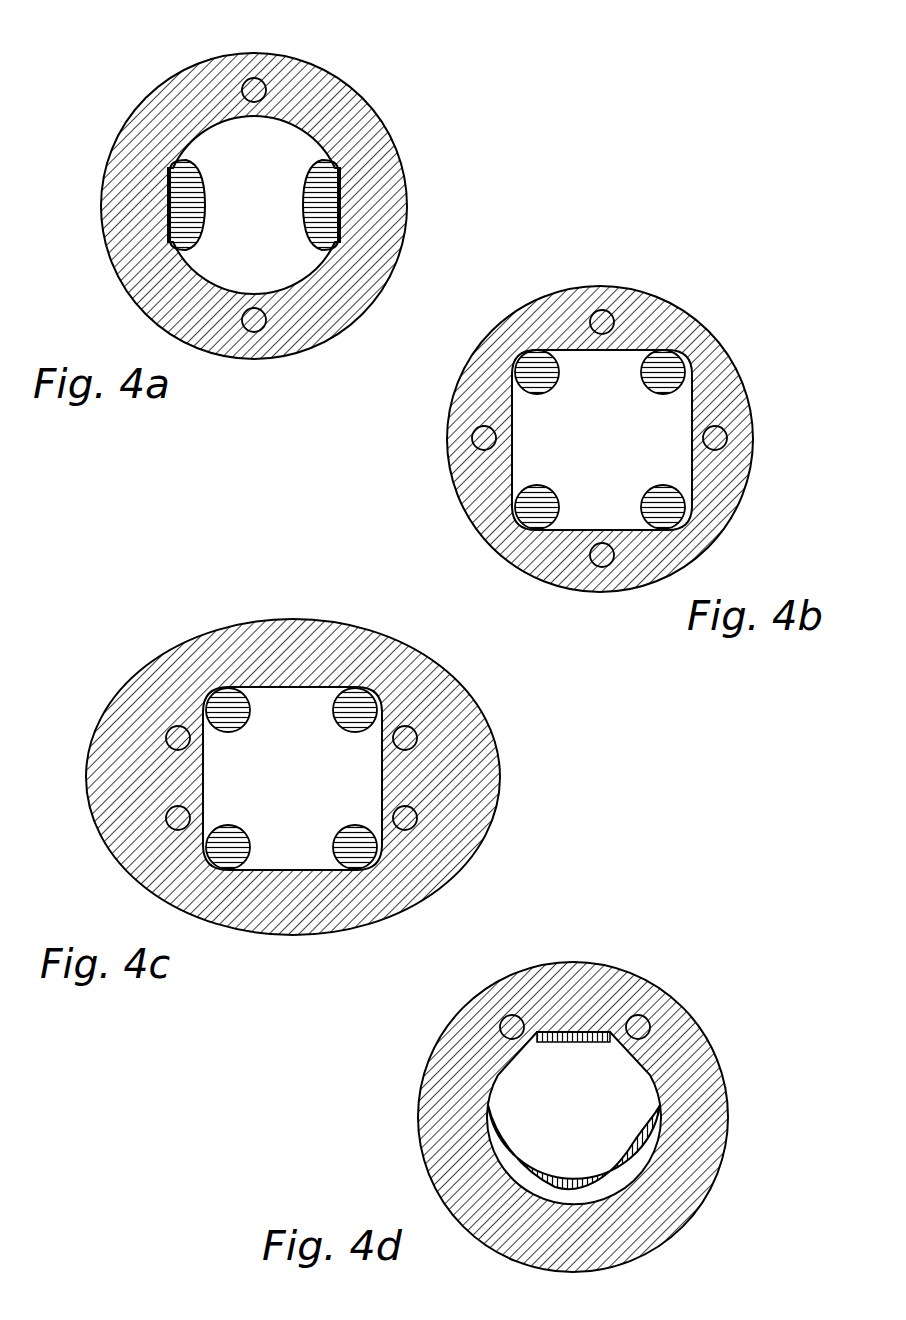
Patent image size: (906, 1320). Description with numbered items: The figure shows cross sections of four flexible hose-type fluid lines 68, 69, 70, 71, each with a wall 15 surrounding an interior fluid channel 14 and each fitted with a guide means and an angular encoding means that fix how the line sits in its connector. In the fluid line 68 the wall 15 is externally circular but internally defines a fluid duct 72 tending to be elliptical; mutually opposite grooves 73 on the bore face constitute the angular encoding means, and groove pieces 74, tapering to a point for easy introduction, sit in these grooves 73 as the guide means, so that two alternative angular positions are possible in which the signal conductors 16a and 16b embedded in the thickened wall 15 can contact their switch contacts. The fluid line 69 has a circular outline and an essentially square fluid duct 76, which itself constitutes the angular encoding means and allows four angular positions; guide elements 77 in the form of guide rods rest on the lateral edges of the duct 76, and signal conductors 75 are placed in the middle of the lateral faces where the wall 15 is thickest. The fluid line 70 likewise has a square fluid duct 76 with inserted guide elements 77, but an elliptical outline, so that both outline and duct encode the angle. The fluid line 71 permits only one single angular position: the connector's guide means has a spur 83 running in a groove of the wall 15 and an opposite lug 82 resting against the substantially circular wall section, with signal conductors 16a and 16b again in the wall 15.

In FIG. 4d, the fluid channel 14 is at (625, 1109).
In FIG. 4a, the wall 15 is at (140, 125).
In FIG. 4b, the wall 15 is at (730, 390).
In FIG. 4c, the wall 15 is at (203, 652).
In FIG. 4d, the wall 15 is at (433, 1082).
In FIG. 4a, the signal conductor 16a is at (246, 83).
In FIG. 4d, the signal conductor 16a is at (500, 1023).
In FIG. 4a, the signal conductor 16b is at (257, 331).
In FIG. 4d, the signal conductor 16b is at (640, 1017).
In FIG. 4a, the fluid line 68 is at (266, 214).
In FIG. 4b, the fluid line 69 is at (607, 437).
In FIG. 4c, the fluid line 70 is at (317, 749).
In FIG. 4d, the fluid line 71 is at (554, 1090).
In FIG. 4a, the fluid duct 72 is at (260, 160).
In FIG. 4a, the grooves 73 is at (337, 227).
In FIG. 4a, the groove pieces 74 is at (318, 207).
In FIG. 4b, the signal conductors 75 is at (598, 312).
In FIG. 4c, the signal conductors 75 is at (167, 820).
In FIG. 4b, the fluid duct 76 is at (617, 388).
In FIG. 4c, the fluid duct 76 is at (300, 736).
In FIG. 4b, the guide elements 77 is at (657, 497).
In FIG. 4c, the guide elements 77 is at (347, 840).
In FIG. 4d, the lug 82 is at (508, 1153).
In FIG. 4d, the spur 83 is at (577, 1043).